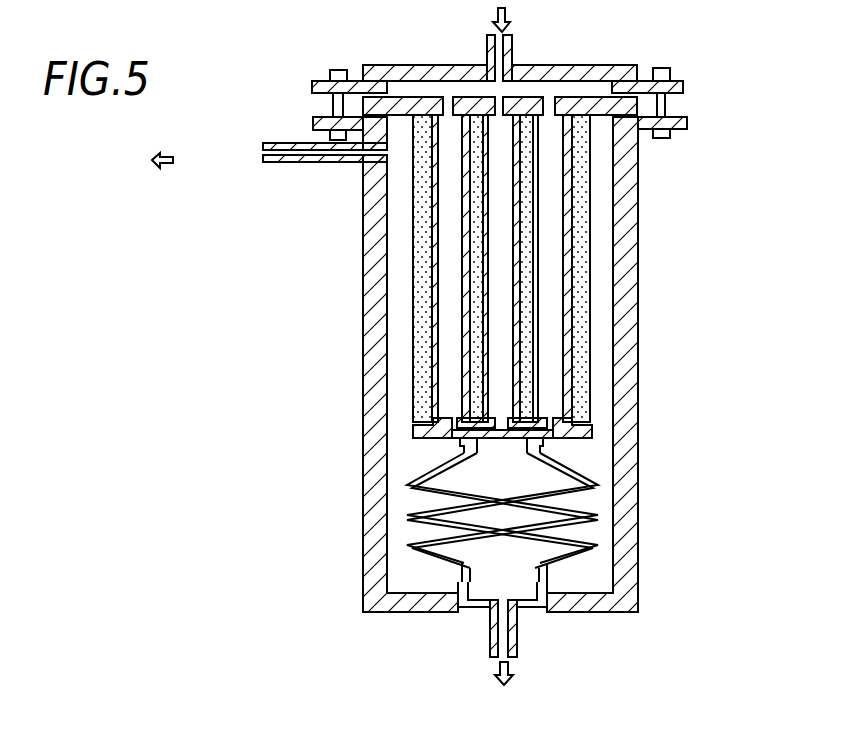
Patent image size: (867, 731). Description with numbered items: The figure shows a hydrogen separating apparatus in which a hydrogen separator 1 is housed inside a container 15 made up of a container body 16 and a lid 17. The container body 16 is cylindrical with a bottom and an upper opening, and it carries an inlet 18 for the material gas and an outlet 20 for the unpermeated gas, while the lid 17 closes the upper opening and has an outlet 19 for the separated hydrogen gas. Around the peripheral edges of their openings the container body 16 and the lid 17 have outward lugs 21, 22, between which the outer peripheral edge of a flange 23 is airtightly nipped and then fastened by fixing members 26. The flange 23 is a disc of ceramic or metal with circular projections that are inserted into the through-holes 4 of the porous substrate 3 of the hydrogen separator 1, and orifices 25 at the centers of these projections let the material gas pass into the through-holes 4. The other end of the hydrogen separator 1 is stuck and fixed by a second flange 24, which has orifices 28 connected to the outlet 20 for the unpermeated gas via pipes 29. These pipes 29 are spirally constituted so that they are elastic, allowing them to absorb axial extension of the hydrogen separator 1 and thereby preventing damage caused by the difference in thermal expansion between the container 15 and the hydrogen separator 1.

The hydrogen separator 1 is at (590, 280).
The porous substrate 3 is at (573, 184).
The through-holes 4 is at (550, 335).
The container 15 is at (691, 1).
The container body 16 is at (637, 217).
The lid 17 is at (627, 63).
The inlet 18 is at (512, 36).
The outlet 19 is at (305, 163).
The outlet 20 is at (517, 627).
The outward lug 21 is at (687, 122).
The outward lug 22 is at (685, 81).
The flange 23 is at (637, 100).
The flange 24 is at (593, 425).
The orifices 25 is at (447, 98).
The fixing members 26 is at (333, 70).
The orifices 28 is at (460, 433).
The pipes 29 is at (603, 510).